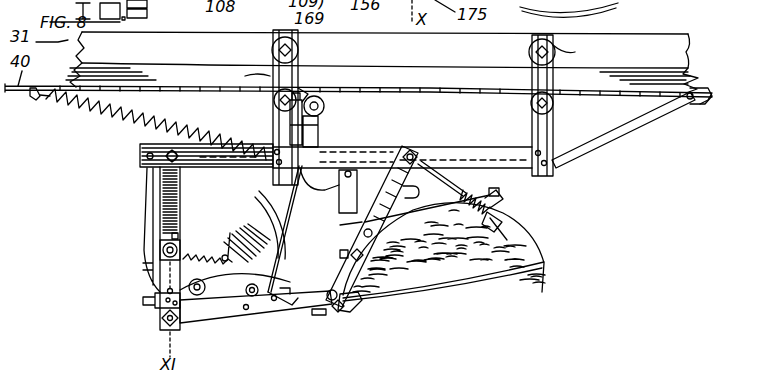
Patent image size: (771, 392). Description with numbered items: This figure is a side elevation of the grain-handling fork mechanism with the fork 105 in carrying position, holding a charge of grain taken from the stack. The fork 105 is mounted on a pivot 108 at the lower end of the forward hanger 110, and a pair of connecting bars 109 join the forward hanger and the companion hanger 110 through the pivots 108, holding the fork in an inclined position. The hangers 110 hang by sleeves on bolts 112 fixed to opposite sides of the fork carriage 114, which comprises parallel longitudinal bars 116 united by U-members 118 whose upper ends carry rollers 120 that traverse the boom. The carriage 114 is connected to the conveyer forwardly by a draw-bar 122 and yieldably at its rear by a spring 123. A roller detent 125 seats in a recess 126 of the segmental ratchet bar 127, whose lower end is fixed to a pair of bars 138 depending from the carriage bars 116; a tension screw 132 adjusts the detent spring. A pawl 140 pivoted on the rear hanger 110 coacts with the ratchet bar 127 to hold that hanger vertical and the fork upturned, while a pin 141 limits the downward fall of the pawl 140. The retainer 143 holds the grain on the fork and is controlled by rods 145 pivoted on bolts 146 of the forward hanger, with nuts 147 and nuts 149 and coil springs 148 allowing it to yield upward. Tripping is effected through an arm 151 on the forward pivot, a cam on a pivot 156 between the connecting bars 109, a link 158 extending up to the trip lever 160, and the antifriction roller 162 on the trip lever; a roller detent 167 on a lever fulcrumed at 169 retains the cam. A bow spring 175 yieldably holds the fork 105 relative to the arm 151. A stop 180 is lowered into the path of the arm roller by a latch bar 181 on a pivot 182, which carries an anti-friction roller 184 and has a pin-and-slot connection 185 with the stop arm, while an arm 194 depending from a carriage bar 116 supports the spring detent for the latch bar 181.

The fork 105 is at (428, 297).
The pivot 108 is at (160, 322).
The connecting bars 109 is at (318, 318).
The hanger 110 is at (162, 189).
The bolt 112 is at (140, 160).
The fork carriage 114 is at (497, 135).
The longitudinal bars 116 is at (348, 159).
The U-member 118 is at (270, 47).
The rollers 120 is at (416, 66).
The draw-bar 122 is at (640, 118).
The spring 123 is at (98, 112).
The roller detent 125 is at (204, 304).
The recess 126 is at (229, 262).
The segmental ratchet bar 127 is at (270, 196).
The tension screw 132 is at (152, 301).
The bars 138 is at (146, 213).
The pawl 140 is at (184, 256).
The pin 141 is at (179, 232).
The retainer 143 is at (488, 222).
The rods 145 is at (506, 191).
The bolts 146 is at (360, 231).
The nuts 147 is at (444, 249).
The coil springs 148 is at (500, 211).
The nuts 149 is at (503, 205).
The arm 151 is at (284, 297).
The pivot 156 is at (275, 316).
The link 158 is at (289, 243).
The trip lever 160 is at (320, 133).
The antifriction roller 162 is at (302, 92).
The roller detent 167 is at (248, 286).
The fulcrum 169 is at (250, 312).
The bow spring 175 is at (352, 308).
The stop 180 is at (342, 254).
The latch bar 181 is at (339, 182).
The pivot 182 is at (348, 200).
The anti-friction roller 184 is at (326, 107).
The pin-and-slot connection 185 is at (427, 195).
The arm 194 is at (340, 226).